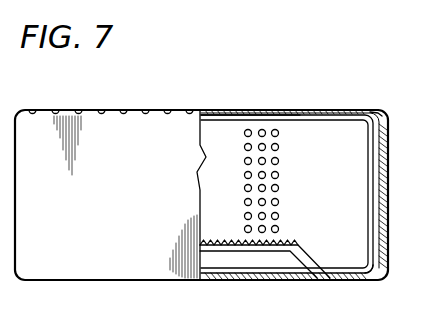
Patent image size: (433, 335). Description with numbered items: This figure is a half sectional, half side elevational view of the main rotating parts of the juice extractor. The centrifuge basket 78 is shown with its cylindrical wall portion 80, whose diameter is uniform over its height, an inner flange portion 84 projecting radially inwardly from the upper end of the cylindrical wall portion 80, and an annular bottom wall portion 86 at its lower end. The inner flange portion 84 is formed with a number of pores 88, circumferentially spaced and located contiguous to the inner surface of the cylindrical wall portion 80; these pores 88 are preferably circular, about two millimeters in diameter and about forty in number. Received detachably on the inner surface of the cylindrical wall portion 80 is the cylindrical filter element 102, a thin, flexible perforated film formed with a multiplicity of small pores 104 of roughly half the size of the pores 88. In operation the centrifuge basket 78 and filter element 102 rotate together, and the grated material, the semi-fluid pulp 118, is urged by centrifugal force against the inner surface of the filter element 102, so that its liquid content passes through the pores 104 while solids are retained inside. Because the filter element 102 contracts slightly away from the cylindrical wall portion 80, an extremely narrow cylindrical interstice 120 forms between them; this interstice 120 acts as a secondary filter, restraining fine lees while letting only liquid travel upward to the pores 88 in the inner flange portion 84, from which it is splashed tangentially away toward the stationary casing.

The centrifuge basket 78 is at (213, 110).
The cylindrical wall portion 80 is at (389, 168).
The inner flange portion 84 is at (371, 112).
The annular bottom wall portion 86 is at (346, 283).
The pores 88 is at (99, 108).
The cylindrical filter element 102 is at (258, 119).
The small pores 104 is at (279, 161).
The semi-fluid pulp 118 is at (364, 186).
The cylindrical interstice 120 is at (383, 260).